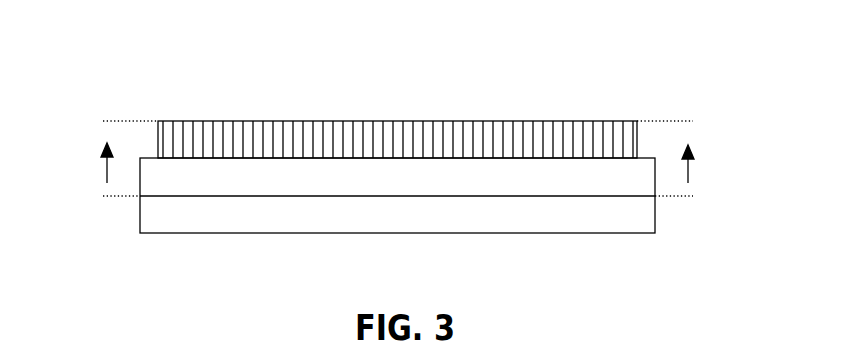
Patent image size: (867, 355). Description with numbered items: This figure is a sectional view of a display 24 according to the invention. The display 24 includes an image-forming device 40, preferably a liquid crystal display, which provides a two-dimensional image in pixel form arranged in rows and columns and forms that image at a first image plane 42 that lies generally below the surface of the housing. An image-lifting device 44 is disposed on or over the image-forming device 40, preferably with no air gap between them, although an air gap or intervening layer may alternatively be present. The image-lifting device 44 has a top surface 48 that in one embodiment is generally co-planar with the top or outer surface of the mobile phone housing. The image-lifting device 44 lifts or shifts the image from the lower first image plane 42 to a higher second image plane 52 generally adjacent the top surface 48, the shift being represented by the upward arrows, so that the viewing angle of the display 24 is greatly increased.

The display 24 is at (205, 64).
The image-forming device 40 is at (720, 162).
The first image plane 42 is at (108, 197).
The image-lifting device 44 is at (637, 131).
The top surface 48 is at (449, 120).
The second image plane 52 is at (118, 121).